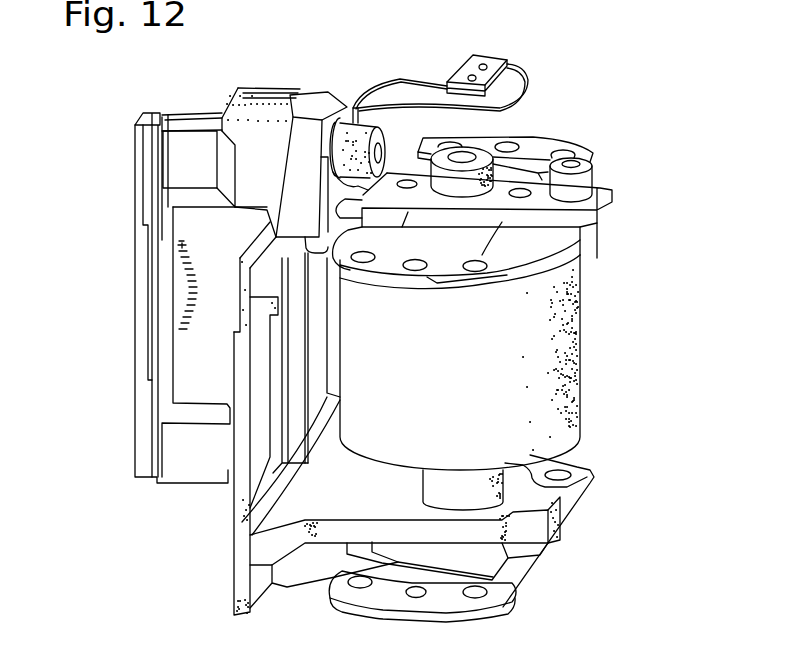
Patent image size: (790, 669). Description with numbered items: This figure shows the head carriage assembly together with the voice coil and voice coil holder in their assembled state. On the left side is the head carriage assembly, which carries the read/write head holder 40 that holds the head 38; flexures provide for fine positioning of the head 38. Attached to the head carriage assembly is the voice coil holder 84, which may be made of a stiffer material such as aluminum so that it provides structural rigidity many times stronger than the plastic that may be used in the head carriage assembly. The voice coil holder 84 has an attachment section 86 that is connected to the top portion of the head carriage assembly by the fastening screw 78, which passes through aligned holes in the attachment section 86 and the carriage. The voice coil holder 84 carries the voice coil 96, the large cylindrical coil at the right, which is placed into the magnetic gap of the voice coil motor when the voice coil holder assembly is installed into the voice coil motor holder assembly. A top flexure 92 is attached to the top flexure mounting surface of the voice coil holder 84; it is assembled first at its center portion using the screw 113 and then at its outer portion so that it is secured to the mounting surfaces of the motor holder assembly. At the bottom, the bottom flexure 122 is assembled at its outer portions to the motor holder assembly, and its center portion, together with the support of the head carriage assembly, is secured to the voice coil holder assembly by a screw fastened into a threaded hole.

The head 38 is at (147, 198).
The read/write head holder 40 is at (178, 157).
The fastening screw 78 is at (383, 127).
The voice coil holder 84 is at (590, 244).
The attachment section 86 is at (320, 104).
The top flexure 92 is at (555, 143).
The voice coil 96 is at (560, 331).
The screw 113 is at (480, 155).
The bottom flexure 122 is at (356, 603).